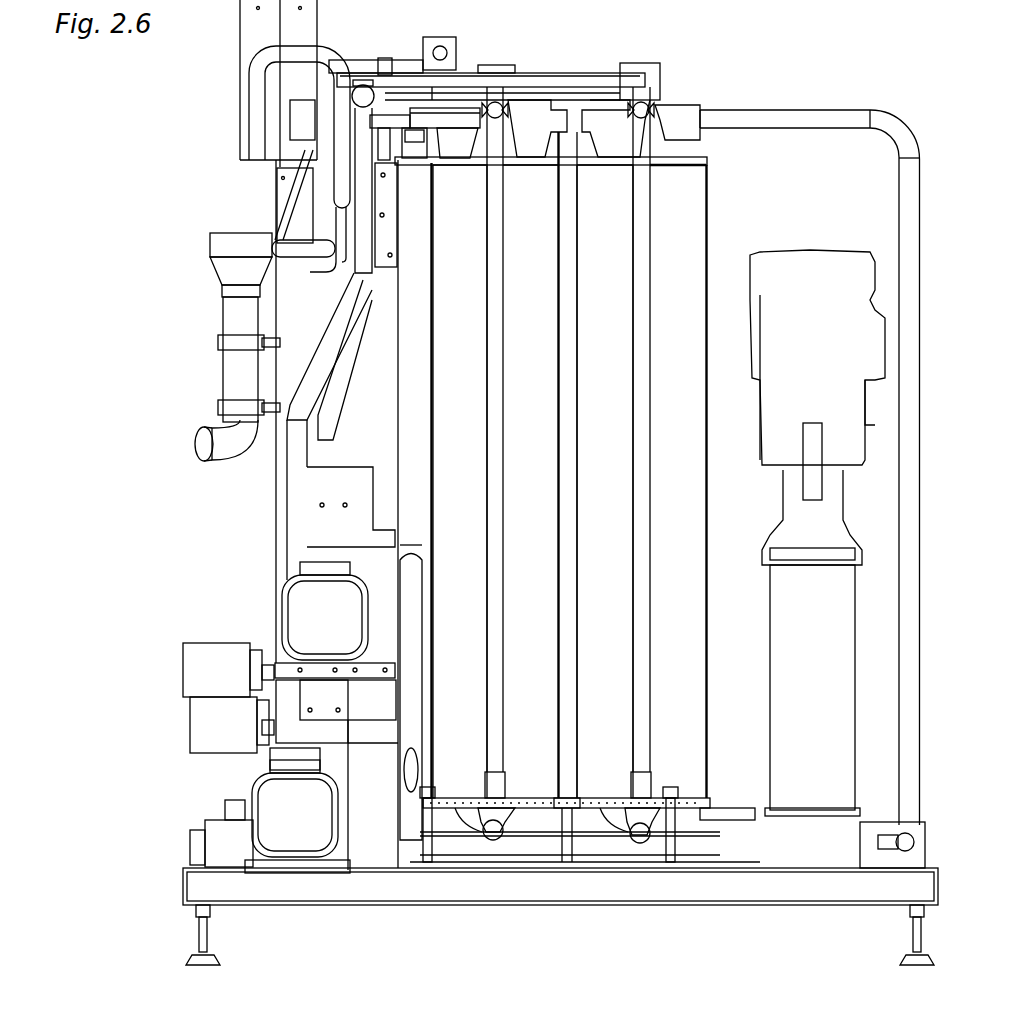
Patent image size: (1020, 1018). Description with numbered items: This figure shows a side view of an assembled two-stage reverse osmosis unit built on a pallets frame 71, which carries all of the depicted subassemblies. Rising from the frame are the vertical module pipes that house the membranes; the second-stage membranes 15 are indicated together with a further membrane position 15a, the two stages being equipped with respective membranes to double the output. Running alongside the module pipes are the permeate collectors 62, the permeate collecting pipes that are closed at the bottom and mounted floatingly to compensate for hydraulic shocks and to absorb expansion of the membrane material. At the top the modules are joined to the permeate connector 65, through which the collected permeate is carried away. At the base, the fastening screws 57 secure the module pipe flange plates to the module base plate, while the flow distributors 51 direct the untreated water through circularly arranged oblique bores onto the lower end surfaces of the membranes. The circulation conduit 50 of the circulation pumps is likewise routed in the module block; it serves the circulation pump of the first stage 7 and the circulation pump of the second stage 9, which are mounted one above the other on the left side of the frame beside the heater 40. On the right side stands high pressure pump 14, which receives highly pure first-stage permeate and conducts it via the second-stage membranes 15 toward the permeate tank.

The permeate connector 65 is at (538, 80).
The filter column 15a is at (470, 322).
The membranes 2nd stage 15 is at (616, 300).
The permeate collector 62 is at (491, 352).
The high pressure pump 2 14 is at (785, 418).
The circulation pump 2nd stage 9 is at (308, 612).
The heater 40 is at (213, 680).
The circulation pump 1st stage 7 is at (287, 818).
The fastening screws 57 is at (425, 850).
The flow distributor 51 is at (500, 835).
The circulation conduit 50 is at (587, 850).
The pallets frame 71 is at (838, 905).